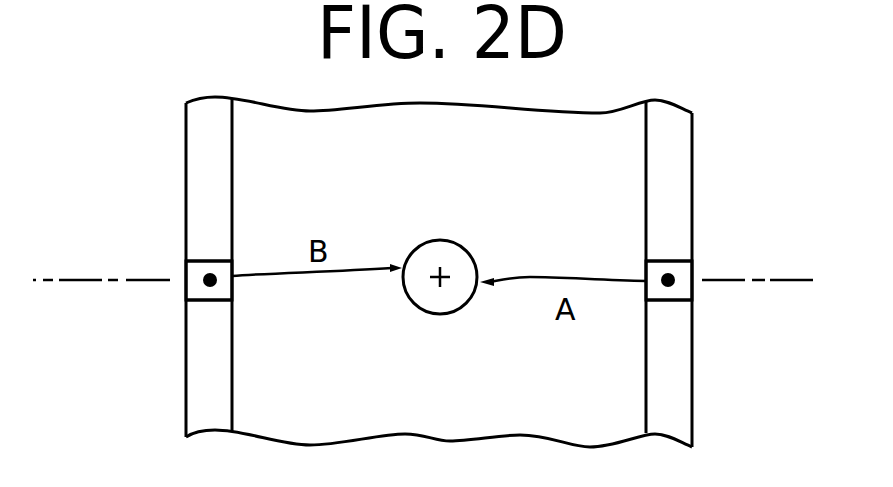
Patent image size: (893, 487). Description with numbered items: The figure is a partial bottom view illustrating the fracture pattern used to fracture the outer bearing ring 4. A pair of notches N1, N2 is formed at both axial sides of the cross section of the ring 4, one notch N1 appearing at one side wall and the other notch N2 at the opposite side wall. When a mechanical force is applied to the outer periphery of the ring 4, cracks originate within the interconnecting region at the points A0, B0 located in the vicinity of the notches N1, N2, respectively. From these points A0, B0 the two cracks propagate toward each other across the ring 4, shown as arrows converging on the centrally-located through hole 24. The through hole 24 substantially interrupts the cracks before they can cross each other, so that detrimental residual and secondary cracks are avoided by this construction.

The outer bearing ring 4 is at (708, 126).
The centrally-located through hole 24 is at (457, 241).
The crack origination point A0 is at (676, 278).
The crack origination point B0 is at (200, 278).
The notch N1 is at (682, 290).
The notch N2 is at (194, 292).